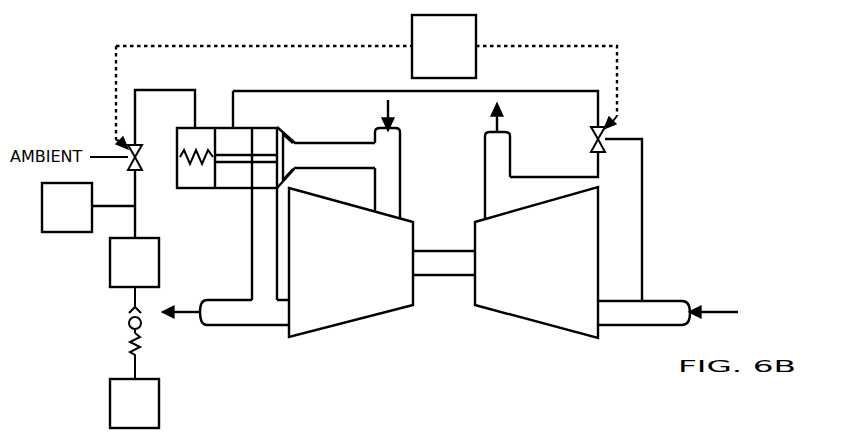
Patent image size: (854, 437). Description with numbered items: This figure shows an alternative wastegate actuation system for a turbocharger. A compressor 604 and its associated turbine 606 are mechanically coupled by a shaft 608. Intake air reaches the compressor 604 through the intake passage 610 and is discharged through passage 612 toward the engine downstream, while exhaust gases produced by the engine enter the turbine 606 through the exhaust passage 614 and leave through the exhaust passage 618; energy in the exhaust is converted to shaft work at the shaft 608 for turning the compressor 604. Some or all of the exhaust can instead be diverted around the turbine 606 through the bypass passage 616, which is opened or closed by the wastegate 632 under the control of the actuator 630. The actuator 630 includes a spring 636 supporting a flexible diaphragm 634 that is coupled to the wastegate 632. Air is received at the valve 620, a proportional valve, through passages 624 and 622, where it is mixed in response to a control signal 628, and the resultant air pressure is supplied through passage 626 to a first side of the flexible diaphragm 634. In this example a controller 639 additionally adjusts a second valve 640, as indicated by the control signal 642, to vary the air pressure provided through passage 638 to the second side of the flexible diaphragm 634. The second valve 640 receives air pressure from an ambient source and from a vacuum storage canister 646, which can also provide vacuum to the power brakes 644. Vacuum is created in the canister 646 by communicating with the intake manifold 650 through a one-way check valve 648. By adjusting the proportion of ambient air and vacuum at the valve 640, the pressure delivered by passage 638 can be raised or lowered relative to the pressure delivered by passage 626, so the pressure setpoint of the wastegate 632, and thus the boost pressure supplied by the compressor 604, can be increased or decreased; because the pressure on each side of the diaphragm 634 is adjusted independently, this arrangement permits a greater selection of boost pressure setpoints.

The compressor 604 is at (528, 322).
The turbine 606 is at (360, 328).
The shaft 608 is at (446, 250).
The intake passage 610 is at (630, 325).
The passage 612 is at (484, 163).
The exhaust passage 614 is at (372, 178).
The bypass passage 616 is at (252, 268).
The exhaust passage 618 is at (225, 325).
The valve 620 is at (594, 130).
The passage 622 is at (542, 176).
The passage 624 is at (645, 218).
The passage 626 is at (430, 93).
The control signal 628 is at (619, 78).
The actuator 630 is at (210, 127).
The wastegate 632 is at (291, 141).
The flexible diaphragm 634 is at (218, 180).
The spring 636 is at (187, 164).
The passage 638 is at (190, 90).
The controller 639 is at (432, 56).
The second valve 640 is at (140, 148).
The control signal 642 is at (116, 78).
The power brakes 644 is at (67, 207).
The vacuum storage canister 646 is at (134, 262).
The one-way check valve 648 is at (125, 323).
The intake manifold 650 is at (134, 403).